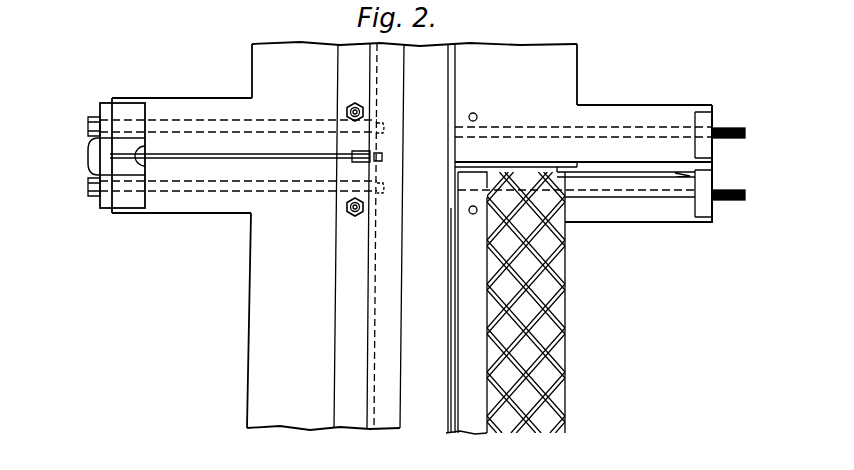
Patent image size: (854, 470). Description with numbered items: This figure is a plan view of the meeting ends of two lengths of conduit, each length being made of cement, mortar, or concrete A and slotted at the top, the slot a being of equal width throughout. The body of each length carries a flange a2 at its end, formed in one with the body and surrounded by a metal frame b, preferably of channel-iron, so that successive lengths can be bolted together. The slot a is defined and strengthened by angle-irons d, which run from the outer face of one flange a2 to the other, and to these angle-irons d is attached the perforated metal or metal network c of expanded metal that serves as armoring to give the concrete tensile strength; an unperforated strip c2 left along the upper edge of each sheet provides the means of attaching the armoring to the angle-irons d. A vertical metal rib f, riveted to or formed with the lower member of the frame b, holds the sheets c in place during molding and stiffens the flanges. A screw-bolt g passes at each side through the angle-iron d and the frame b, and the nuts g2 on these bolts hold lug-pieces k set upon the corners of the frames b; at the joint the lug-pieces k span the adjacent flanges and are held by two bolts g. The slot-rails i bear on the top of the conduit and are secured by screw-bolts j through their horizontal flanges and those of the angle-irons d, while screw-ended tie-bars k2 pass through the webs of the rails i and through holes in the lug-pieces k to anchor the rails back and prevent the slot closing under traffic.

The cement, mortar, or concrete A is at (412, 236).
The slot a is at (410, 239).
The slot-rails i is at (385, 236).
The angle-irons d is at (447, 420).
The flanges a2 is at (412, 161).
The screw-bolt g is at (223, 125).
The nuts g2 is at (92, 120).
The lug-pieces k is at (110, 158).
The tie-bars k2 is at (273, 160).
The screw-bolts j is at (348, 108).
The metal frame b is at (712, 115).
The vertical metal rib f is at (683, 176).
The unperforated strip c2 is at (470, 272).
The perforated metal or metal network c is at (543, 290).